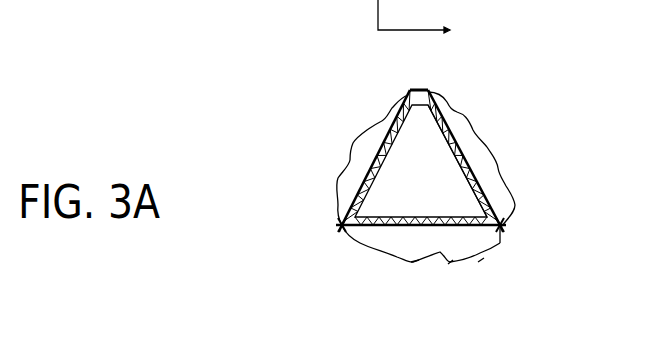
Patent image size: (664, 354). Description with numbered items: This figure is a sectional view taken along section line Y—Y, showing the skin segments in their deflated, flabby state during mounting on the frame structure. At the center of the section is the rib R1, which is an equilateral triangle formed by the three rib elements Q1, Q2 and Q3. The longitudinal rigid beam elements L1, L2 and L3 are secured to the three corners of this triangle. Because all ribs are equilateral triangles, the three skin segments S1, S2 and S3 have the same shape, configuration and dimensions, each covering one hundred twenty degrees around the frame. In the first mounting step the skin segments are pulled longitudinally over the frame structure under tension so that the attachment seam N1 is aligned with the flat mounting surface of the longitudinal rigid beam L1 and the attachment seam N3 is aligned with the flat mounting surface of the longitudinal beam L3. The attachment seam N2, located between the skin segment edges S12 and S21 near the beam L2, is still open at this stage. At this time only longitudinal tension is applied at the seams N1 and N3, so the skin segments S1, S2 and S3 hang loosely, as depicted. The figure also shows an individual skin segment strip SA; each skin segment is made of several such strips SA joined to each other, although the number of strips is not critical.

The section line Y is at (422, 19).
The attachment seam N1 is at (405, 83).
The attachment seam N2 is at (522, 222).
The attachment seam N3 is at (322, 221).
The longitudinal rigid beam element L1 is at (420, 91).
The longitudinal rigid beam element L2 is at (500, 227).
The longitudinal rigid beam element L3 is at (342, 225).
The rib element Q1 is at (383, 148).
The rib element Q2 is at (450, 110).
The rib element Q3 is at (380, 223).
The skin segment S1 is at (487, 150).
The skin segment S2 is at (215, 0).
The skin segment S3 is at (352, 140).
The skin segment edge S12 is at (513, 205).
The skin segment edge S21 is at (497, 243).
The skin segment strip SA is at (603, 0).
The rib R1 is at (487, 187).